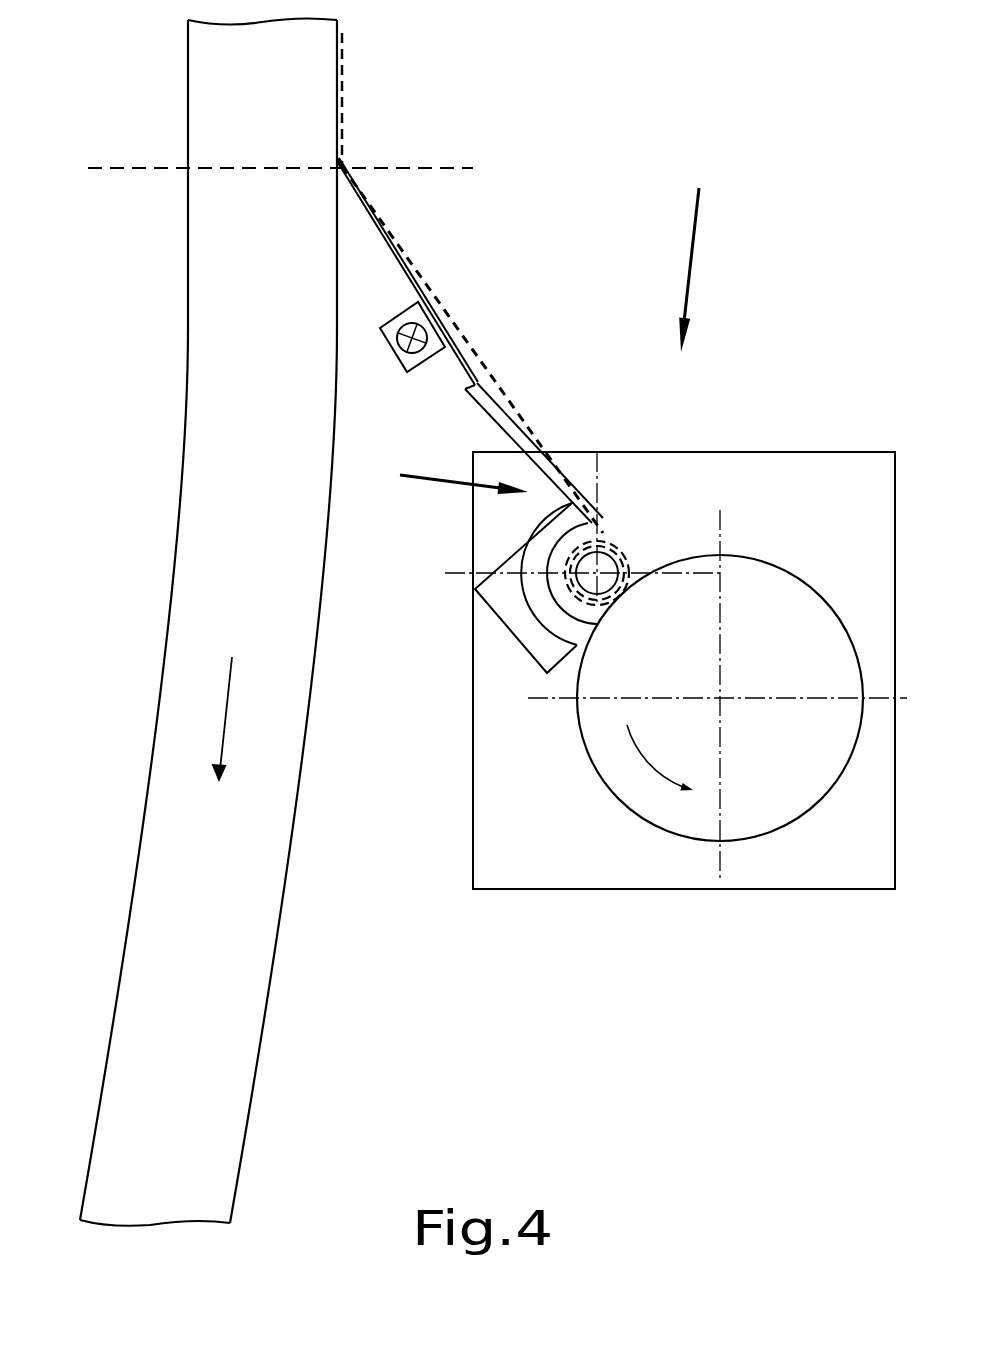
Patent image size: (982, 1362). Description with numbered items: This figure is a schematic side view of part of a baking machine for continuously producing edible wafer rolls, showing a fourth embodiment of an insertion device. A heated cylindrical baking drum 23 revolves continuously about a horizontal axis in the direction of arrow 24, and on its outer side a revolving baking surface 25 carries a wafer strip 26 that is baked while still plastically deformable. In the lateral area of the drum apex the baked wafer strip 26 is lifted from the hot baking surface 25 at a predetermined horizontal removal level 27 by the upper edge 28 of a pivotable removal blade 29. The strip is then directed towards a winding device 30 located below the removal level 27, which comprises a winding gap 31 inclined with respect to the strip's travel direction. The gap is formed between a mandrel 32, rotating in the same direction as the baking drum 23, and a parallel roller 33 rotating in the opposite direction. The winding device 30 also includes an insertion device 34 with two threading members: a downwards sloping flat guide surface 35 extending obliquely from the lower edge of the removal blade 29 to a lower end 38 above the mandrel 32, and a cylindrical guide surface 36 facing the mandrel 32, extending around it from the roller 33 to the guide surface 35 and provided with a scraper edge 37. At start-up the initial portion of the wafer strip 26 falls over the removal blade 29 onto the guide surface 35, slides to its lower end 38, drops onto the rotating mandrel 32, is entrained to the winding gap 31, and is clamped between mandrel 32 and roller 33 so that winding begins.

The baking drum 23 is at (204, 52).
The arrow 24 is at (225, 715).
The baking surface 25 is at (283, 937).
The wafer strip 26 is at (343, 58).
The removal level 27 is at (113, 168).
The upper edge 28 is at (341, 158).
The removal blade 29 is at (392, 257).
The winding device 30 is at (684, 513).
The winding gap 31 is at (630, 587).
The mandrel 32 is at (588, 563).
The roller 33 is at (812, 605).
The insertion device 34 is at (441, 477).
The guide surface 35 is at (497, 407).
The cylindrical guide surface 36 is at (565, 603).
The scraper edge 37 is at (598, 622).
The lower end 38 is at (598, 523).